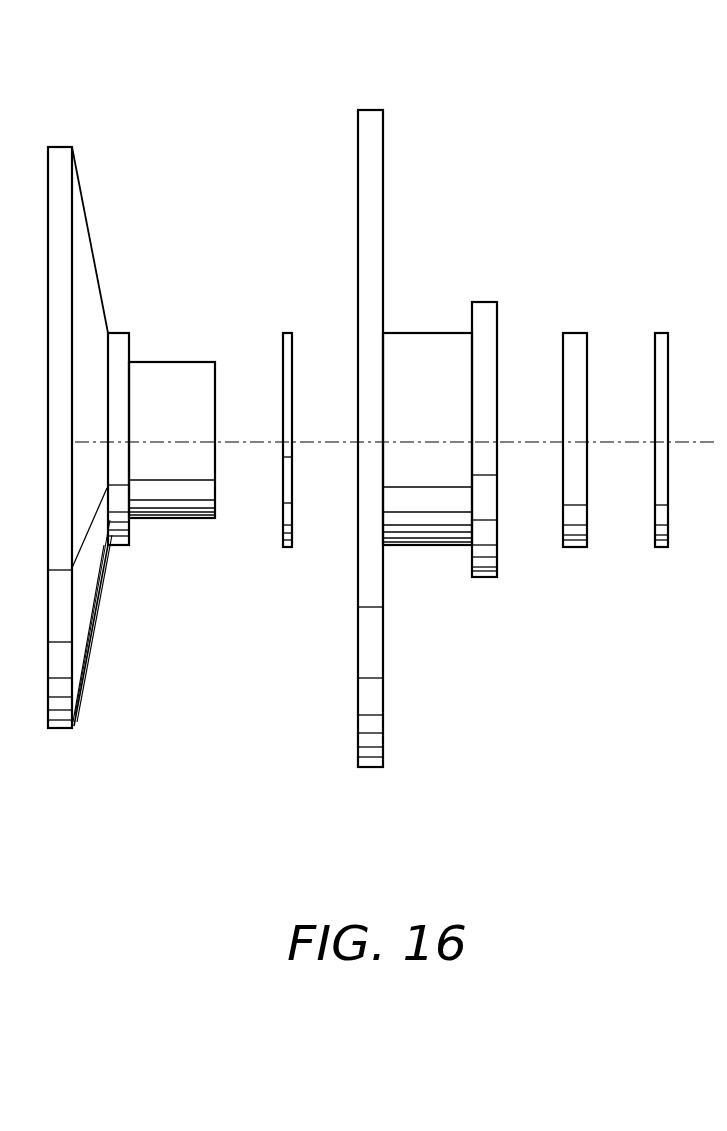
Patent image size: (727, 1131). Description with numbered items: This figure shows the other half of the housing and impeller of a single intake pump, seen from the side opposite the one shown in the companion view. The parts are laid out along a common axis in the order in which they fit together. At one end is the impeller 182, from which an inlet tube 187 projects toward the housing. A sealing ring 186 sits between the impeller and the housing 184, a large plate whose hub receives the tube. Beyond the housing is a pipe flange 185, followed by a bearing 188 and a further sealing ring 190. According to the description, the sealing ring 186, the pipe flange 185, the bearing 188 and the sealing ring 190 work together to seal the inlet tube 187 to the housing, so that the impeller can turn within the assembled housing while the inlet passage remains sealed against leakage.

The impeller 182 is at (62, 147).
The housing 184 is at (367, 110).
The pipe flange 185 is at (483, 302).
The sealing ring 186 is at (286, 333).
The inlet tube 187 is at (167, 362).
The bearing 188 is at (575, 333).
The sealing ring 190 is at (662, 333).